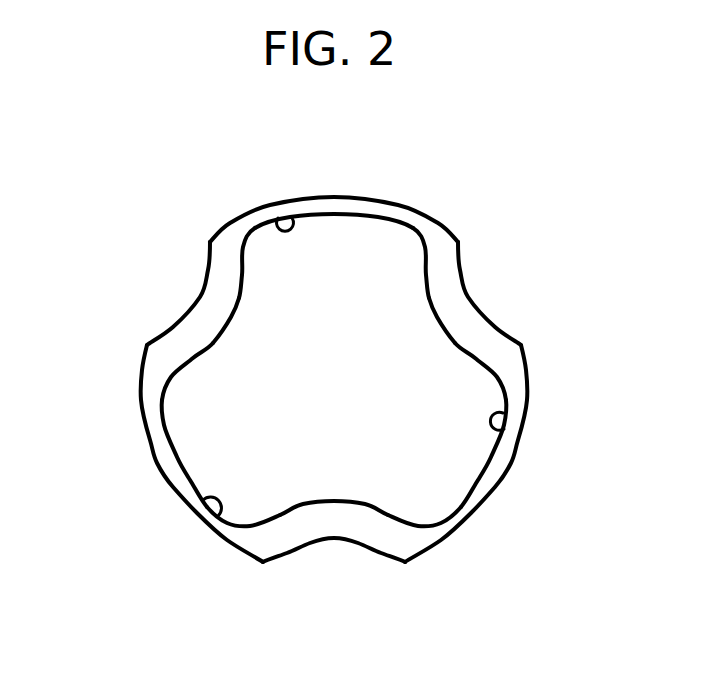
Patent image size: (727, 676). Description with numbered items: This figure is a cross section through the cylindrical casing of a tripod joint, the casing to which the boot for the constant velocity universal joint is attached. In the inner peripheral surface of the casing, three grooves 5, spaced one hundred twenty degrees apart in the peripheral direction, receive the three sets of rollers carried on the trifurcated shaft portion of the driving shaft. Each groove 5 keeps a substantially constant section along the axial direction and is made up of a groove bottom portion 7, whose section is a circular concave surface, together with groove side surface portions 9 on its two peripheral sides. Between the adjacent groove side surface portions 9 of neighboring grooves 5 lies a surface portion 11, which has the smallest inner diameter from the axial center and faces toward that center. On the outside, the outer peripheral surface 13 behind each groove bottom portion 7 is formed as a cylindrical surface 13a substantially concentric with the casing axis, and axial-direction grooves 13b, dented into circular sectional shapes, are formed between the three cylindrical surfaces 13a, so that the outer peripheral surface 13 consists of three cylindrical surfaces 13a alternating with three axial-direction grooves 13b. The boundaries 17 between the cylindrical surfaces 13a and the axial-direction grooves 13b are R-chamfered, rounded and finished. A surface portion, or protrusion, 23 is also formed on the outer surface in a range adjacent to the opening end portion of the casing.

The groove 5 is at (366, 358).
The groove bottom portion 7 is at (334, 360).
The groove side surface portion 9 is at (334, 377).
The surface portion 11 is at (334, 406).
The outer peripheral surface 13 is at (315, 375).
The cylindrical surface 13a is at (311, 336).
The axial-direction groove 13b is at (332, 439).
The boundary 17 is at (335, 404).
The surface portion (protrusion) 23 is at (335, 375).